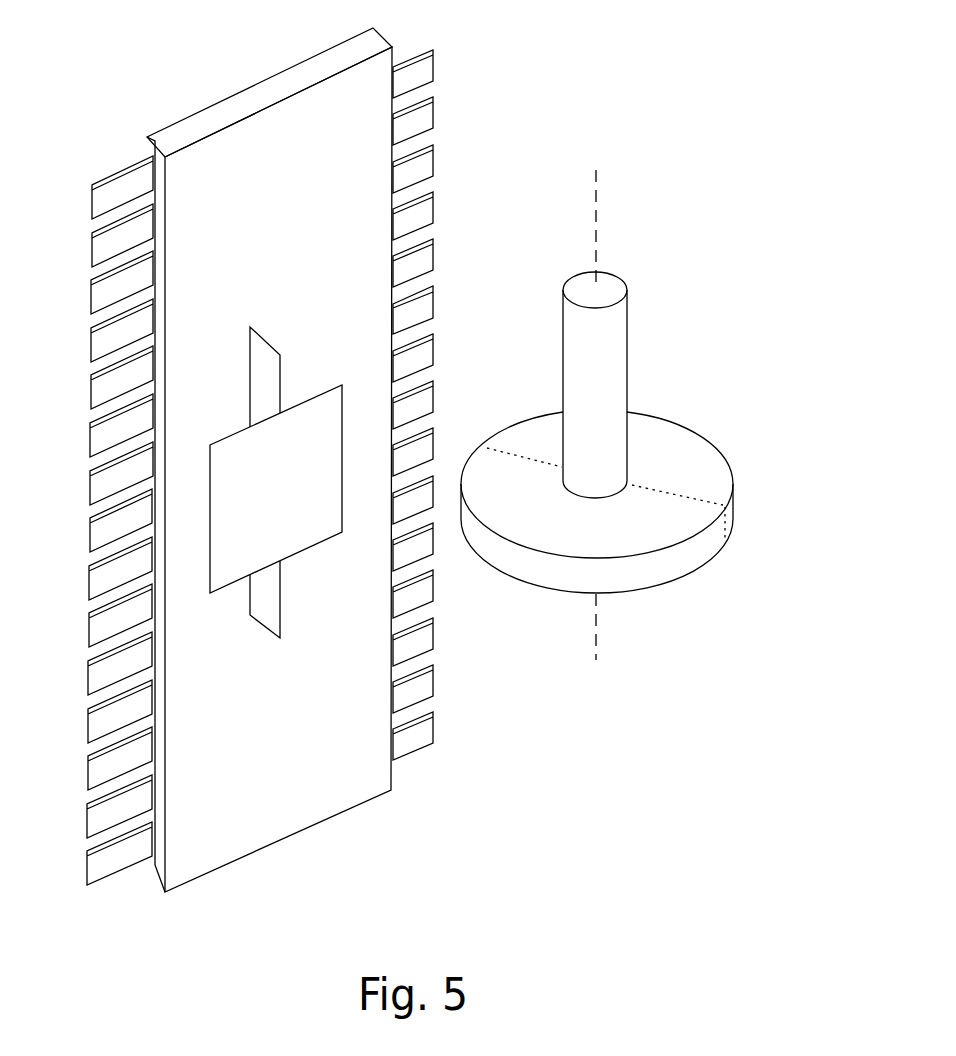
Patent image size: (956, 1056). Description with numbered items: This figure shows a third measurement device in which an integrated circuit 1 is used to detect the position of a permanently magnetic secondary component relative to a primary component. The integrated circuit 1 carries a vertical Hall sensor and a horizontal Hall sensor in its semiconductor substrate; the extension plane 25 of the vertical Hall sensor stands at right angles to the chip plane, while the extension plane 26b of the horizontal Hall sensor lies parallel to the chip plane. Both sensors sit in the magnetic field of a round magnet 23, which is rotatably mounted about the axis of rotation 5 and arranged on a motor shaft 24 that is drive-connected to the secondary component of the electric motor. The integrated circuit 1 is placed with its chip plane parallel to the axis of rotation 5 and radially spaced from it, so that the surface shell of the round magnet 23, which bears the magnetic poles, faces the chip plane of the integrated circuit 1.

The integrated circuit 1 is at (367, 836).
The axis of rotation 5 is at (600, 210).
The round magnet 23 is at (717, 478).
The motor shaft 24 is at (617, 365).
The extension plane 25 is at (262, 350).
The extension plane 26b is at (307, 537).